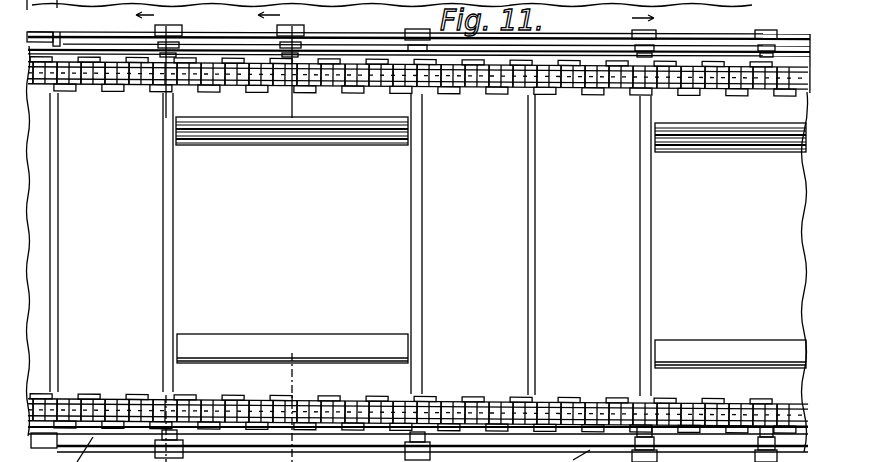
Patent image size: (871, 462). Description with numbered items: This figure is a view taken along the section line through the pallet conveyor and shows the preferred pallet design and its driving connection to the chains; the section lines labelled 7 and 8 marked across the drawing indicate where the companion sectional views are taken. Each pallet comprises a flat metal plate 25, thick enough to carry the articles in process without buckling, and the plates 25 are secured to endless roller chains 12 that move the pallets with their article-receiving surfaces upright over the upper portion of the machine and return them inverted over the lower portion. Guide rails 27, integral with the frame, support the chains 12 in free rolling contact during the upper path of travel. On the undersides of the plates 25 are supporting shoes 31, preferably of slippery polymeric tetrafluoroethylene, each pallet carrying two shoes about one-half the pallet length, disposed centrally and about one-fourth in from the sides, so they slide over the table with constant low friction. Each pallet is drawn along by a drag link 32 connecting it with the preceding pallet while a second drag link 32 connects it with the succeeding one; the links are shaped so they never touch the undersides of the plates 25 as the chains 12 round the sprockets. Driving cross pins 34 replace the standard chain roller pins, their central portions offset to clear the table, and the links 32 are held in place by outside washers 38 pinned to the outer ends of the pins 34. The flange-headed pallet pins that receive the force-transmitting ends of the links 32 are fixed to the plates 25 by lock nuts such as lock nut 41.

The section line 7 is at (290, 233).
The section line 8 is at (166, 233).
The endless roller chain 12 is at (573, 88).
The pallet plate 25 is at (107, 21).
The guide rail 27 is at (110, 75).
The supporting shoe 31 is at (305, 145).
The drag link 32 is at (55, 50).
The driving cross pin 34 is at (167, 302).
The outside washer 38 is at (182, 32).
The lock nut 41 is at (761, 38).